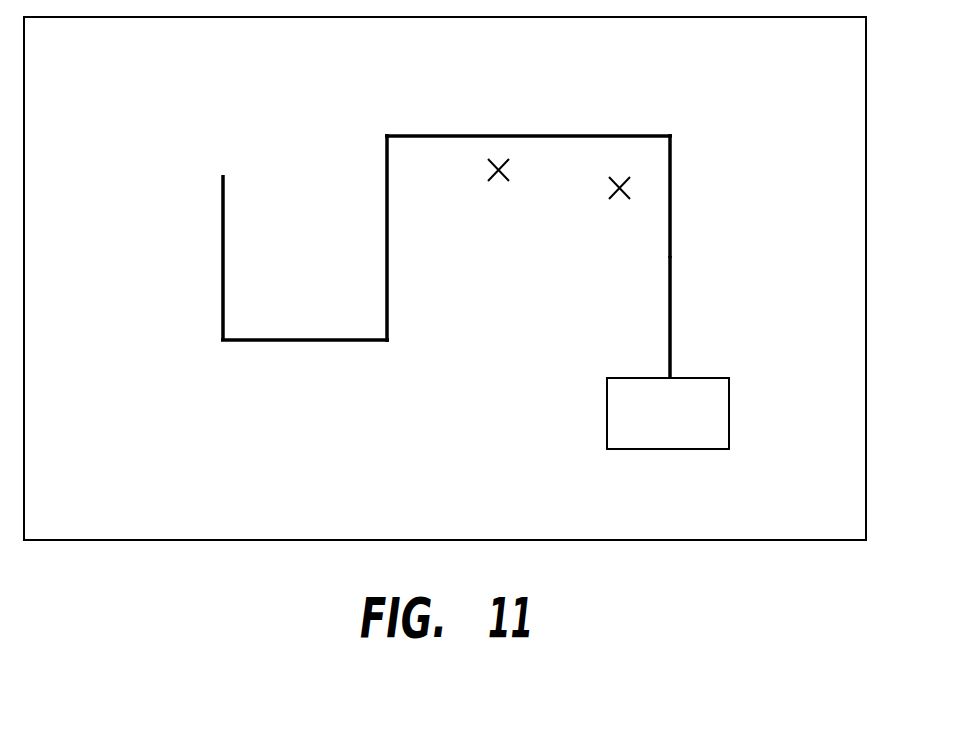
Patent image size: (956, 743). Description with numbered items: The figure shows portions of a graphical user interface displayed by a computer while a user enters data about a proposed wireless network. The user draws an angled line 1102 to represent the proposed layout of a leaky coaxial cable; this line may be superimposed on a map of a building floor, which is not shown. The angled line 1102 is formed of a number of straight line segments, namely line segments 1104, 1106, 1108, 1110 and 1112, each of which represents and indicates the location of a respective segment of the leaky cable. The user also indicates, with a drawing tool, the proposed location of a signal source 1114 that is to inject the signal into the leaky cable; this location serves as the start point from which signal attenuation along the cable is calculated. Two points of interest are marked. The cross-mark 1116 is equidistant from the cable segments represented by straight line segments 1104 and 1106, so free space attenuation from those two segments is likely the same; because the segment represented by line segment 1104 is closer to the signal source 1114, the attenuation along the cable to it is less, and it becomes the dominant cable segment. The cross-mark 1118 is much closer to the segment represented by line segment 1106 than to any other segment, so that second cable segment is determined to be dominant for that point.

The angled line 1102 is at (672, 293).
The straight line segment 1104 is at (672, 199).
The straight line segment 1106 is at (558, 135).
The straight line segment 1108 is at (389, 293).
The straight line segment 1110 is at (297, 342).
The straight line segment 1112 is at (225, 258).
The signal source 1114 is at (708, 377).
The cross-mark 1116 is at (619, 202).
The cross-mark 1118 is at (498, 184).